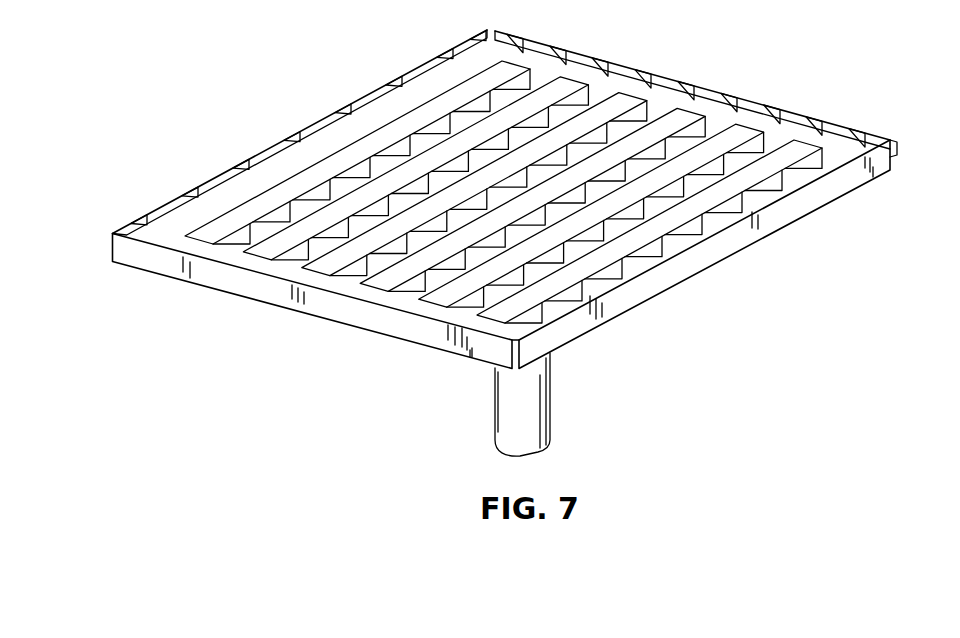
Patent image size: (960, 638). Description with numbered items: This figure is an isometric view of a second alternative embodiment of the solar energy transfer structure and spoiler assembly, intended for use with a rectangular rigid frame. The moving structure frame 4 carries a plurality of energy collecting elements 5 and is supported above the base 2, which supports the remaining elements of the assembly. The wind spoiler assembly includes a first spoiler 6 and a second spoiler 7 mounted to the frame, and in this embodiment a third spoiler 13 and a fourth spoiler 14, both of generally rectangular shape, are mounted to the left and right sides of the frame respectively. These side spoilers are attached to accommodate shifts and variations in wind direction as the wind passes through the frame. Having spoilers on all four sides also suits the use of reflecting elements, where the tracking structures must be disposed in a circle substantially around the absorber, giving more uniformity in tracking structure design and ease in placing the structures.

The base 2 is at (552, 403).
The moving structure frame 4 is at (338, 136).
The energy collecting elements 5 is at (587, 82).
The first spoiler 6 is at (120, 229).
The second spoiler 7 is at (693, 281).
The third spoiler 13 is at (432, 352).
The fourth spoiler 14 is at (883, 134).